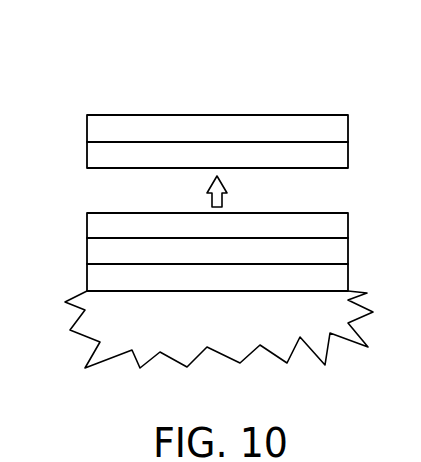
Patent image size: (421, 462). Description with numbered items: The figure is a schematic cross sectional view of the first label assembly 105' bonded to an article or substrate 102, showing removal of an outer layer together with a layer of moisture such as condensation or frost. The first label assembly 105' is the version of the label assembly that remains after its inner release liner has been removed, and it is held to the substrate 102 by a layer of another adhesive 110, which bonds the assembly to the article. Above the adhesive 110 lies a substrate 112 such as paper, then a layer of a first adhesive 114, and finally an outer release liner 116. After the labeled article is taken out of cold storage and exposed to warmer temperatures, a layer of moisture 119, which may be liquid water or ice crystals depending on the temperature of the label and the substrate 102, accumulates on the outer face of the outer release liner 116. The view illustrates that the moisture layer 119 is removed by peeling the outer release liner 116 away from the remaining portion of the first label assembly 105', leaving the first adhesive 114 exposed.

The first label assembly 105' is at (151, 112).
The layer of moisture 119 is at (88, 125).
The outer release liner 116 is at (88, 157).
The layer of a first adhesive 114 is at (88, 226).
The substrate 112 is at (88, 252).
The layer of another adhesive 110 is at (88, 288).
The article or substrate 102 is at (132, 352).